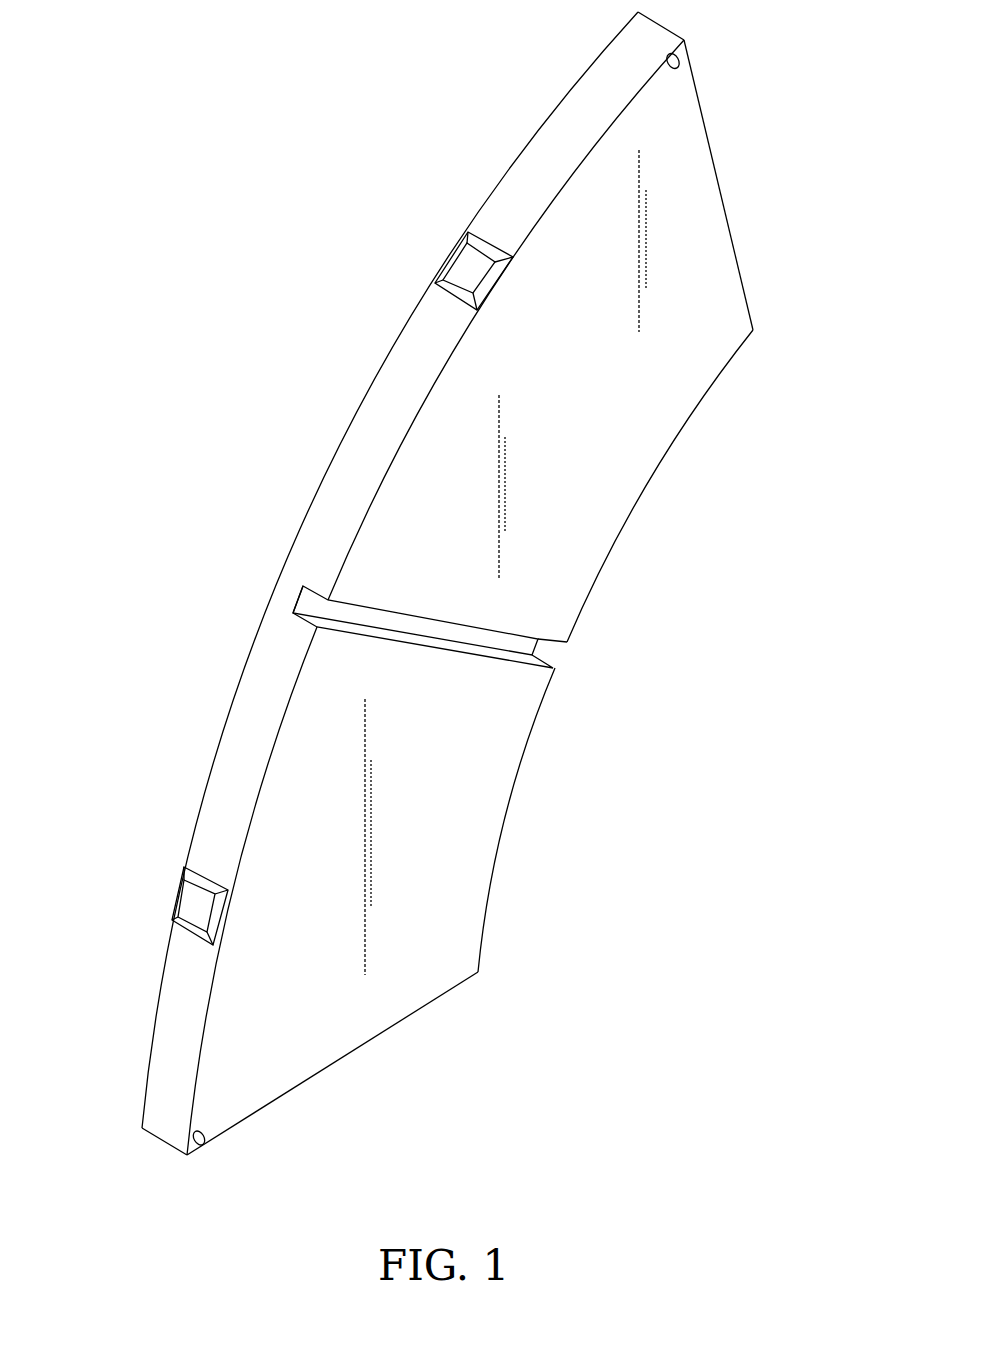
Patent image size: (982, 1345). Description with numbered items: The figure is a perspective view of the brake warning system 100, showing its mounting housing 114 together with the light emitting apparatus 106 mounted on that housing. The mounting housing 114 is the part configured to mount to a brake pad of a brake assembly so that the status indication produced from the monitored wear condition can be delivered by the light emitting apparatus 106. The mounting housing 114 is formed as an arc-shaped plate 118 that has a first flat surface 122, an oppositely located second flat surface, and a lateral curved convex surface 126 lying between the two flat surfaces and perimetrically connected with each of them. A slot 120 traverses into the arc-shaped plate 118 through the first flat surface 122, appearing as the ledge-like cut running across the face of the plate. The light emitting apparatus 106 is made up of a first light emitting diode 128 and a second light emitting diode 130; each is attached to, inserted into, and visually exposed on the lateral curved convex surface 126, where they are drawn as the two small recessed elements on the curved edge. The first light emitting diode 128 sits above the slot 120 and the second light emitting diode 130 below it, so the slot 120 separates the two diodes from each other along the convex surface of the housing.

The brake warning system 100 is at (177, 168).
The light emitting apparatus 106 is at (273, 585).
The mounting housing 114 is at (613, 486).
The arc-shaped plate 118 is at (728, 208).
The slot 120 is at (547, 655).
The first flat surface 122 is at (713, 317).
The lateral curved convex surface 126 is at (632, 50).
The first light emitting diode 128 is at (468, 267).
The second light emitting diode 130 is at (193, 905).